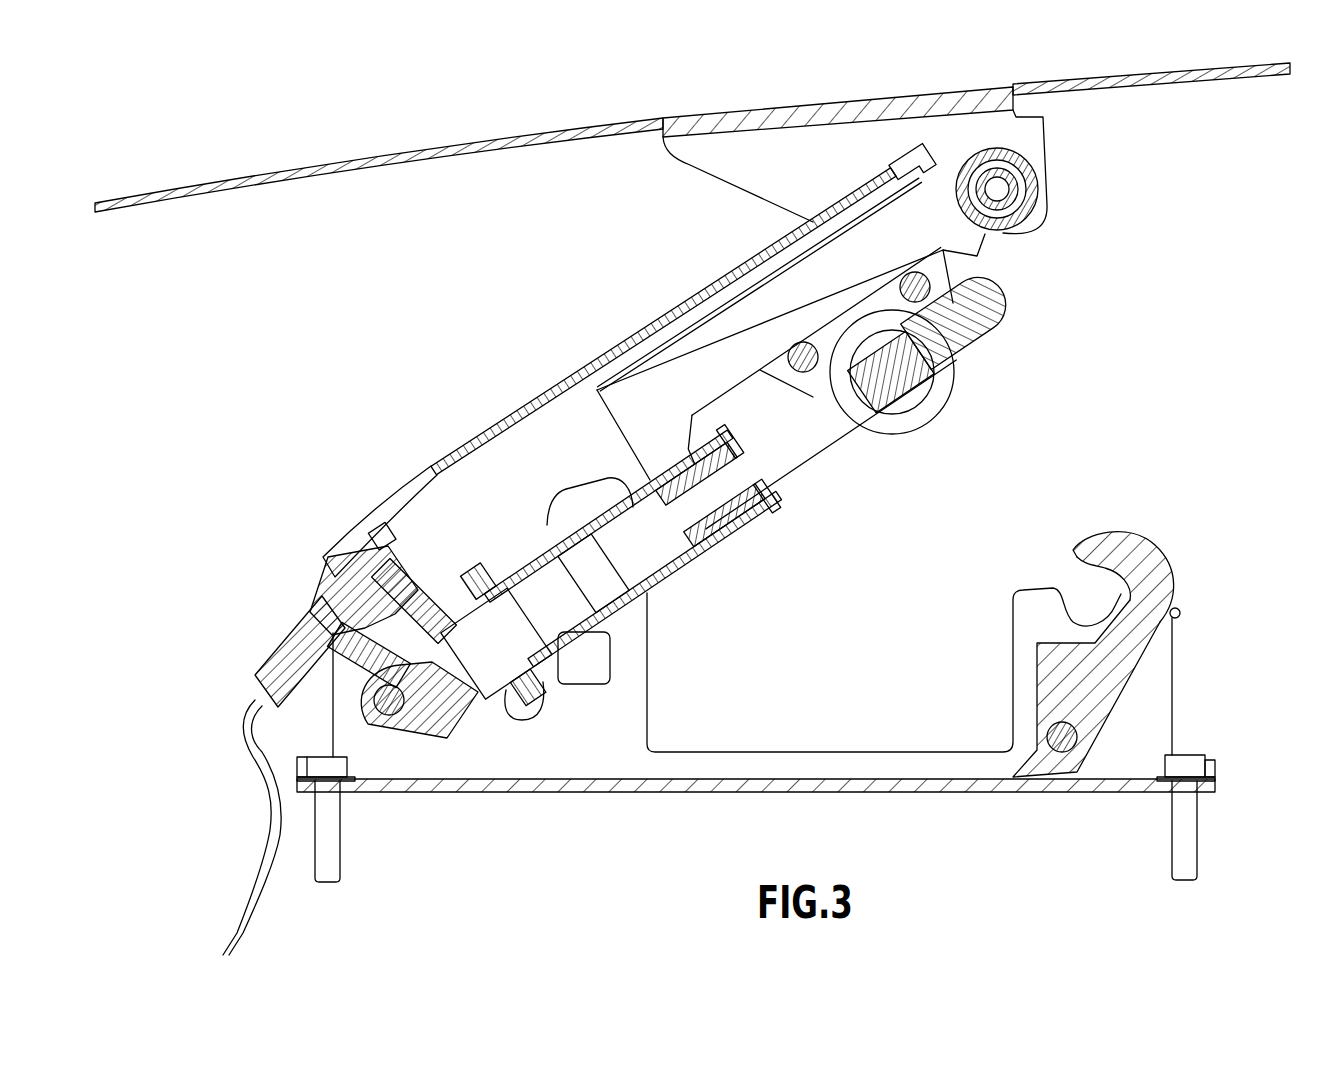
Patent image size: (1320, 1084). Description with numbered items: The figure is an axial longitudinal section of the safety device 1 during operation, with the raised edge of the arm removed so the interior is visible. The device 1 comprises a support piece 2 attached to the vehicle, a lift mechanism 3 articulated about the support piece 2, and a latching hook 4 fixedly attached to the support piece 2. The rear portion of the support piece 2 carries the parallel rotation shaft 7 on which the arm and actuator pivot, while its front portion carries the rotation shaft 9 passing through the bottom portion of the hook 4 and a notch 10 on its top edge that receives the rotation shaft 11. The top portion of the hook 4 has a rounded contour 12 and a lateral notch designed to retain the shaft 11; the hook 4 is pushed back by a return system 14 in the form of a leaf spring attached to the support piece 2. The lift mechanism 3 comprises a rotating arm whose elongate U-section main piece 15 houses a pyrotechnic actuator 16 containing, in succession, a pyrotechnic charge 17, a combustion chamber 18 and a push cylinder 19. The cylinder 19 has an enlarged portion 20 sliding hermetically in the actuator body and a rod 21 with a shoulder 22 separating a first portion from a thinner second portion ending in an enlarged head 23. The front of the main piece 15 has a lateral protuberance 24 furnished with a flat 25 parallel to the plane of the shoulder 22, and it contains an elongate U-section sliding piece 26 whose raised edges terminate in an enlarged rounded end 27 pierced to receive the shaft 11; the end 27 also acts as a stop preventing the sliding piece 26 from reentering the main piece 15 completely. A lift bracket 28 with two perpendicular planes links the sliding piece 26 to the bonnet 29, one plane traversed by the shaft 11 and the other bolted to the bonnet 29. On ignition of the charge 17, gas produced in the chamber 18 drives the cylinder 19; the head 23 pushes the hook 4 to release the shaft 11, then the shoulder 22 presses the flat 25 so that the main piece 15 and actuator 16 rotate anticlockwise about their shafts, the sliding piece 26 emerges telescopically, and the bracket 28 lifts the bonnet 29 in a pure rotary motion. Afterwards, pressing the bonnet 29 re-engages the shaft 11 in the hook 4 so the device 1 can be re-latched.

The safety device 1 is at (1143, 337).
The support piece 2 is at (677, 792).
The lift mechanism 3 is at (545, 388).
The latching hook 4 is at (1105, 680).
The rotation shaft 7 is at (367, 727).
The rotation shaft 9 is at (1043, 753).
The notch 10 is at (1083, 603).
The rotation shaft 11 is at (1000, 186).
The rounded contour 12 is at (1163, 560).
The return system 14 is at (1173, 617).
The main piece 15 is at (460, 490).
The pyrotechnic actuator 16 is at (593, 630).
The pyrotechnic charge 17 is at (433, 657).
The combustion chamber 18 is at (520, 600).
The push cylinder 19 is at (620, 523).
The enlarged portion 20 is at (627, 567).
The rod 21 is at (697, 500).
The shoulder 22 is at (840, 407).
The head 23 is at (1005, 318).
The lateral protuberance 24 is at (943, 392).
The flat 25 is at (877, 417).
The sliding piece 26 is at (740, 330).
The enlarged rounded end 27 is at (987, 233).
The lift bracket 28 is at (720, 150).
The bonnet 29 is at (293, 173).